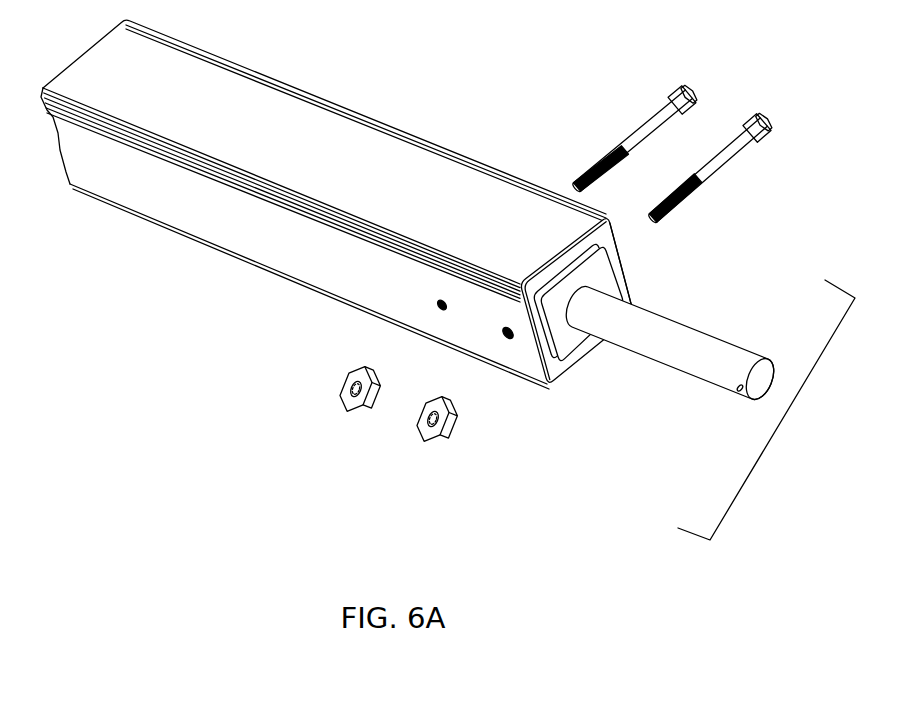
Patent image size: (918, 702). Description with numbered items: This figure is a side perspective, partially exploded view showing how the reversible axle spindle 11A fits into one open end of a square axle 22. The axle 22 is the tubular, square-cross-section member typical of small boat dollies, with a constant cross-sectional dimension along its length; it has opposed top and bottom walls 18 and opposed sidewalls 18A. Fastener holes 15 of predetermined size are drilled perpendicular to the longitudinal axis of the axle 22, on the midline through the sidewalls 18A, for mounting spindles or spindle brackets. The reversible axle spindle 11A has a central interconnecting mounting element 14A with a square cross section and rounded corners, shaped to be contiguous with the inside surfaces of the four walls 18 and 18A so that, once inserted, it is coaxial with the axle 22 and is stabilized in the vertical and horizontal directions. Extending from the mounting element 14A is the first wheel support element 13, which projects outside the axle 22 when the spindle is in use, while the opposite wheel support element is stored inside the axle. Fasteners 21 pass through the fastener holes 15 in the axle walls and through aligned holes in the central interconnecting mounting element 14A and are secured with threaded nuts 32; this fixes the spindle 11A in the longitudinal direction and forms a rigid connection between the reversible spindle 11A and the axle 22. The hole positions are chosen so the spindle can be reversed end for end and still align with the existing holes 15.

The axle 22 is at (381, 84).
The fasteners 21 is at (657, 113).
The top and bottom walls 18 is at (512, 223).
The sidewalls 18A is at (623, 262).
The central interconnecting mounting element 14A is at (600, 268).
The first wheel support element 13 is at (667, 328).
The reversible axle spindle 11A is at (688, 406).
The fastener holes 15 is at (436, 308).
The threaded nuts 32 is at (437, 439).